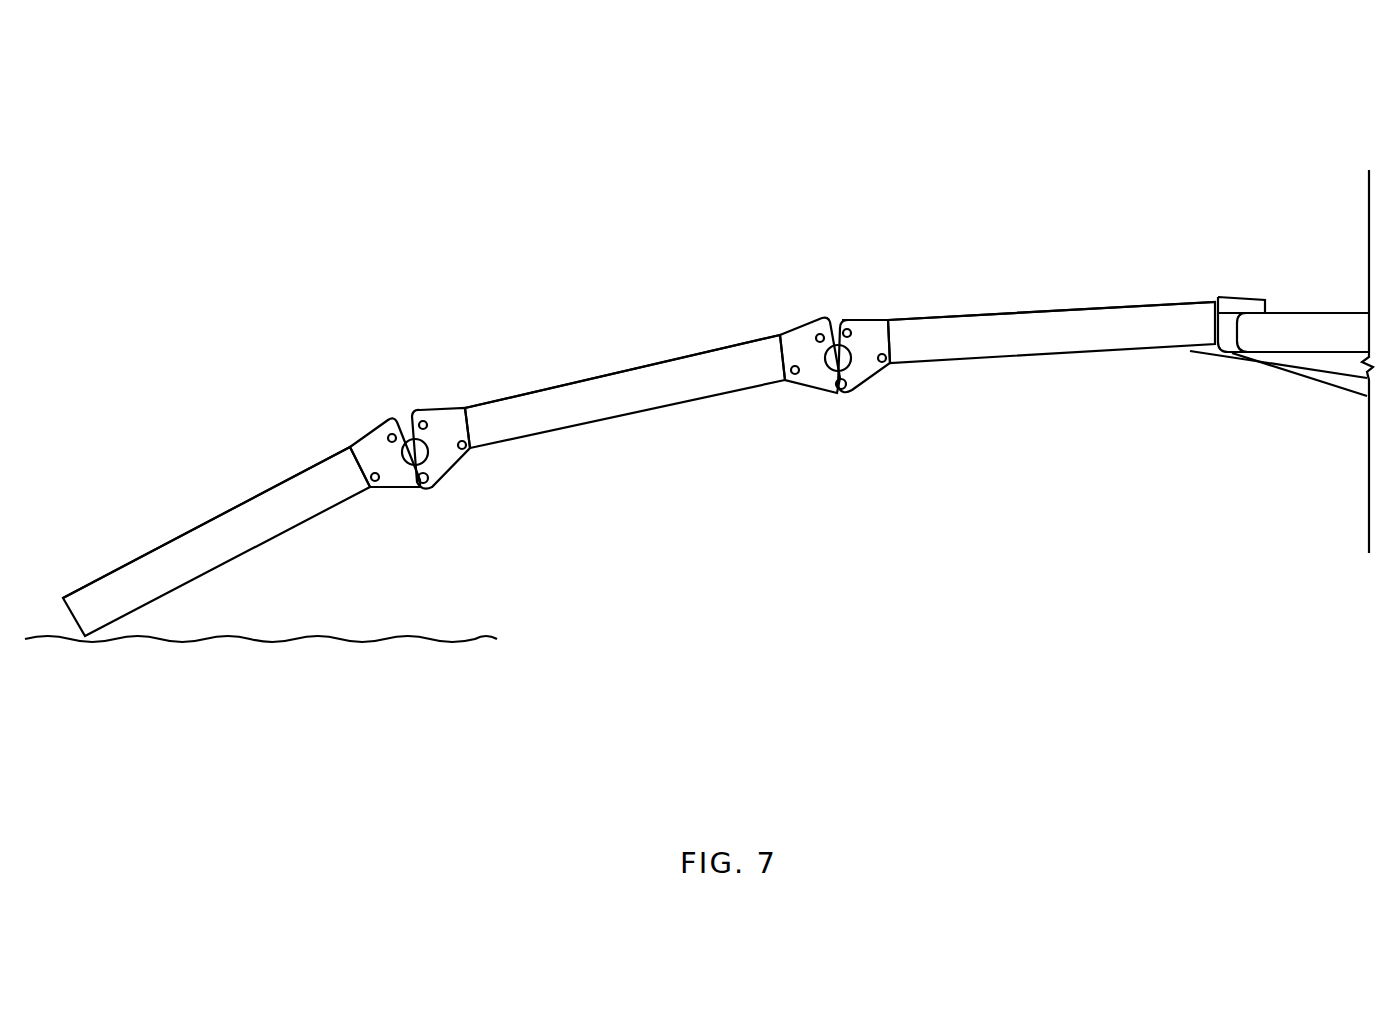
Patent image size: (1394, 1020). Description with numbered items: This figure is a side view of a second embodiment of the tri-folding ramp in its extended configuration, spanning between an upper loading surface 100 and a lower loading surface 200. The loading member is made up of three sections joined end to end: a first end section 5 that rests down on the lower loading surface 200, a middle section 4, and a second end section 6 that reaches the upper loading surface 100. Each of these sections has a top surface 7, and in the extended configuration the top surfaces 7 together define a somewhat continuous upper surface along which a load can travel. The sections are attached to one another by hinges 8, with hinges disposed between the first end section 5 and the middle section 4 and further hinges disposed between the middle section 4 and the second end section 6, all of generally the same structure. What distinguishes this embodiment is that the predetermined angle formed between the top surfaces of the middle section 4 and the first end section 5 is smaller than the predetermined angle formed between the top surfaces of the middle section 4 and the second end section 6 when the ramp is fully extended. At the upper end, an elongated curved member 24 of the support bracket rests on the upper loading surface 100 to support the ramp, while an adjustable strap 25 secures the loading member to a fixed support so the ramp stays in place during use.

The middle section 4 is at (528, 392).
The first end section 5 is at (182, 532).
The second end section 6 is at (1043, 312).
The top surface 7 is at (222, 512).
The hinge 8 is at (433, 485).
The curved member 24 is at (1247, 298).
The adjustable strap 25 is at (1295, 377).
The upper loading surface 100 is at (1347, 313).
The lower loading surface 200 is at (213, 642).